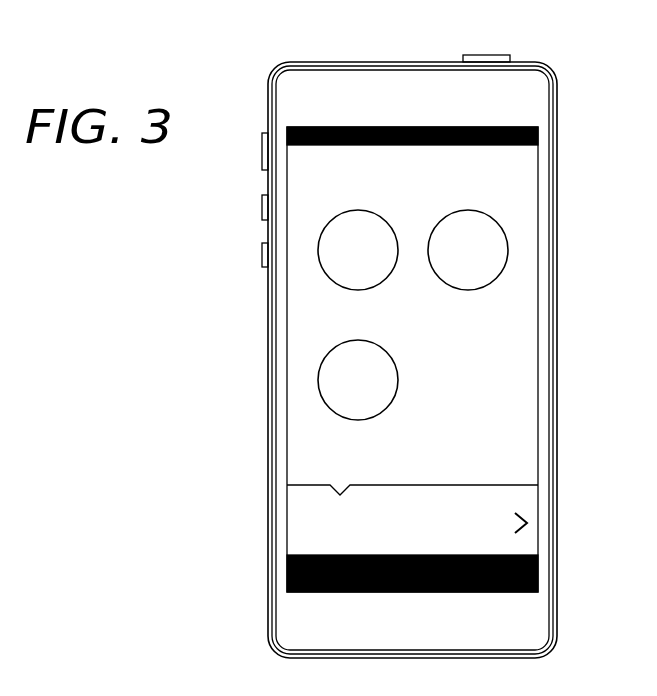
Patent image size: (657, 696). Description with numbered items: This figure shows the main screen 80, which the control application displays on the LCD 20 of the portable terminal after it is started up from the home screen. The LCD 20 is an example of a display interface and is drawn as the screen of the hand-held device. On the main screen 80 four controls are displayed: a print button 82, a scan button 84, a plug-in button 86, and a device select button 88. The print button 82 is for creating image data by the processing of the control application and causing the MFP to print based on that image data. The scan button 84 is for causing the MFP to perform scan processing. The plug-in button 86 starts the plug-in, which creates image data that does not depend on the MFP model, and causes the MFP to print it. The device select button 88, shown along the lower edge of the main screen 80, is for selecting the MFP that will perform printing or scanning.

The LCD 20 is at (503, 112).
The main screen 80 is at (406, 127).
The print button 82 is at (323, 224).
The scan button 84 is at (508, 250).
The plug-in button 86 is at (323, 350).
The device select button 88 is at (515, 498).